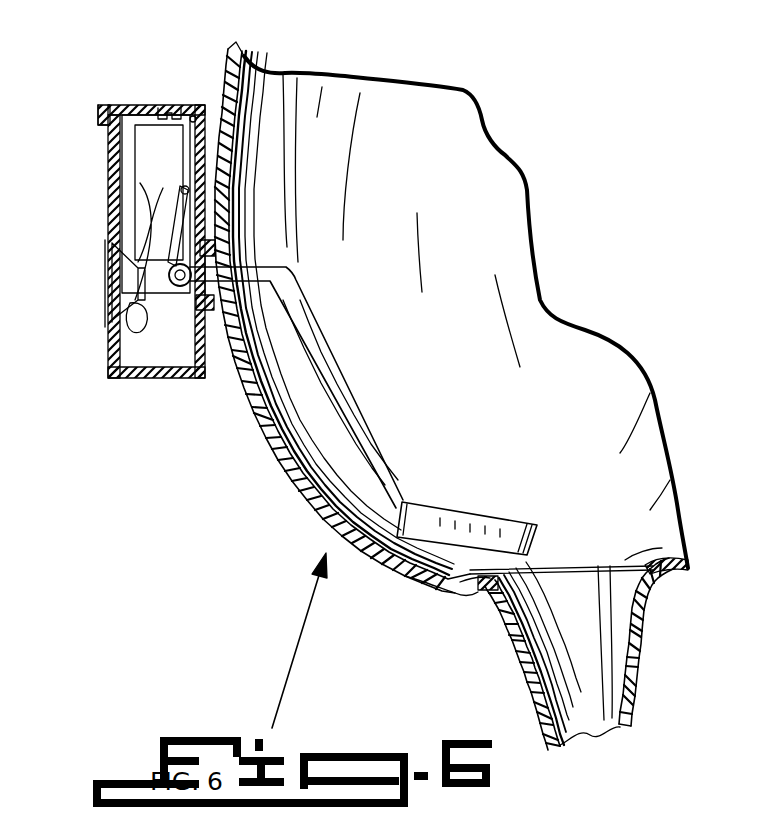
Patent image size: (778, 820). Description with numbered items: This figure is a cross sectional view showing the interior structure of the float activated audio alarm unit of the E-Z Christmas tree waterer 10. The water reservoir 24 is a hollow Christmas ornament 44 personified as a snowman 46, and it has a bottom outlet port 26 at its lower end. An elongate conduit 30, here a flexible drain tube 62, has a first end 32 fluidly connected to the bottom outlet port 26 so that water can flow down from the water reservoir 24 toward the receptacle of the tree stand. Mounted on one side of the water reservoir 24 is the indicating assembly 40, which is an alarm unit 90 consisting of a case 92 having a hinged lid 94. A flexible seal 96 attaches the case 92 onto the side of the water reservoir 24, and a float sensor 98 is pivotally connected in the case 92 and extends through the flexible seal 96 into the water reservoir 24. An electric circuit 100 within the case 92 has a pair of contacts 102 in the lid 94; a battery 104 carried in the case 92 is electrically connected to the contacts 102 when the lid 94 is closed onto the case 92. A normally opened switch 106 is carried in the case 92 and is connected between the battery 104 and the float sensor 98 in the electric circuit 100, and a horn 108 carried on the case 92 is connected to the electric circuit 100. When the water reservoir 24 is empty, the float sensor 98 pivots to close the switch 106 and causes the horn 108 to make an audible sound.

The E-Z Christmas tree waterer 10 is at (520, 136).
The water reservoir 24 is at (310, 507).
The bottom outlet port 26 is at (490, 592).
The elongate conduit 30 is at (638, 692).
The first end 32 is at (647, 597).
The indicating assembly 40 is at (158, 382).
The hollow Christmas ornament 44 is at (430, 586).
The snowman 46 is at (285, 497).
The flexible drain tube 62 is at (545, 710).
The alarm unit 90 is at (102, 368).
The case 92 is at (190, 383).
The hinged lid 94 is at (138, 103).
The flexible seal 96 is at (250, 243).
The float sensor 98 is at (375, 428).
The electric circuit 100 is at (188, 192).
The contacts 102 is at (165, 103).
The battery 104 is at (152, 152).
The normally opened switch 106 is at (185, 228).
The horn 108 is at (117, 296).